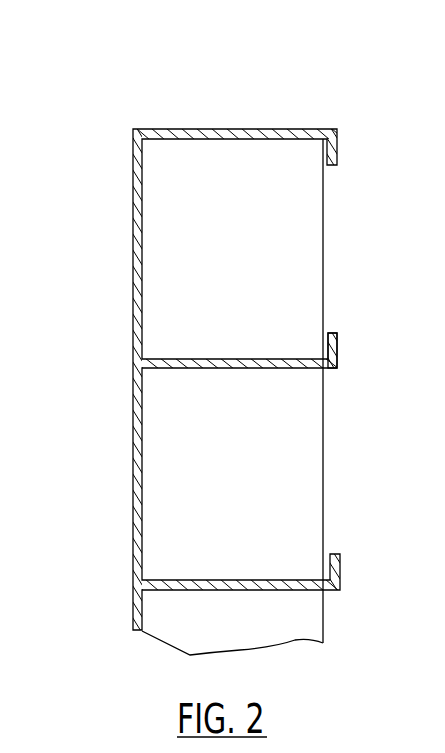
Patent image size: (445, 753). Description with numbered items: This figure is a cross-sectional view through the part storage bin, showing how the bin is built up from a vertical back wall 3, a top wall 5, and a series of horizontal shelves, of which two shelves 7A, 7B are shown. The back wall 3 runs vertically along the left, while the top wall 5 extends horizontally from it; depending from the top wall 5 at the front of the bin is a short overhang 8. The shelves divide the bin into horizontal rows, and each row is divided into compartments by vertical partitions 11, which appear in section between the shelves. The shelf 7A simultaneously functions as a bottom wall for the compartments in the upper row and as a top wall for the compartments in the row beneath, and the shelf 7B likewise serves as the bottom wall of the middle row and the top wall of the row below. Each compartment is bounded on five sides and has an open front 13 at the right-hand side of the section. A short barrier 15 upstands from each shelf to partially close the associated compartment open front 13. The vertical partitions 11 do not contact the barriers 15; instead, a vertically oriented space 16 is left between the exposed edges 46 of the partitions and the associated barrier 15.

The vertical back wall 3 is at (134, 220).
The top wall 5 is at (222, 130).
The short overhang 8 is at (333, 160).
The exposed edges of the partitions 46 is at (322, 222).
The open front 13 is at (335, 264).
The vertically oriented space 16 is at (324, 338).
The short barrier 15 is at (334, 347).
The vertical partitions 11 is at (227, 224).
The shelf 7A is at (209, 356).
The shelf 7B is at (216, 579).